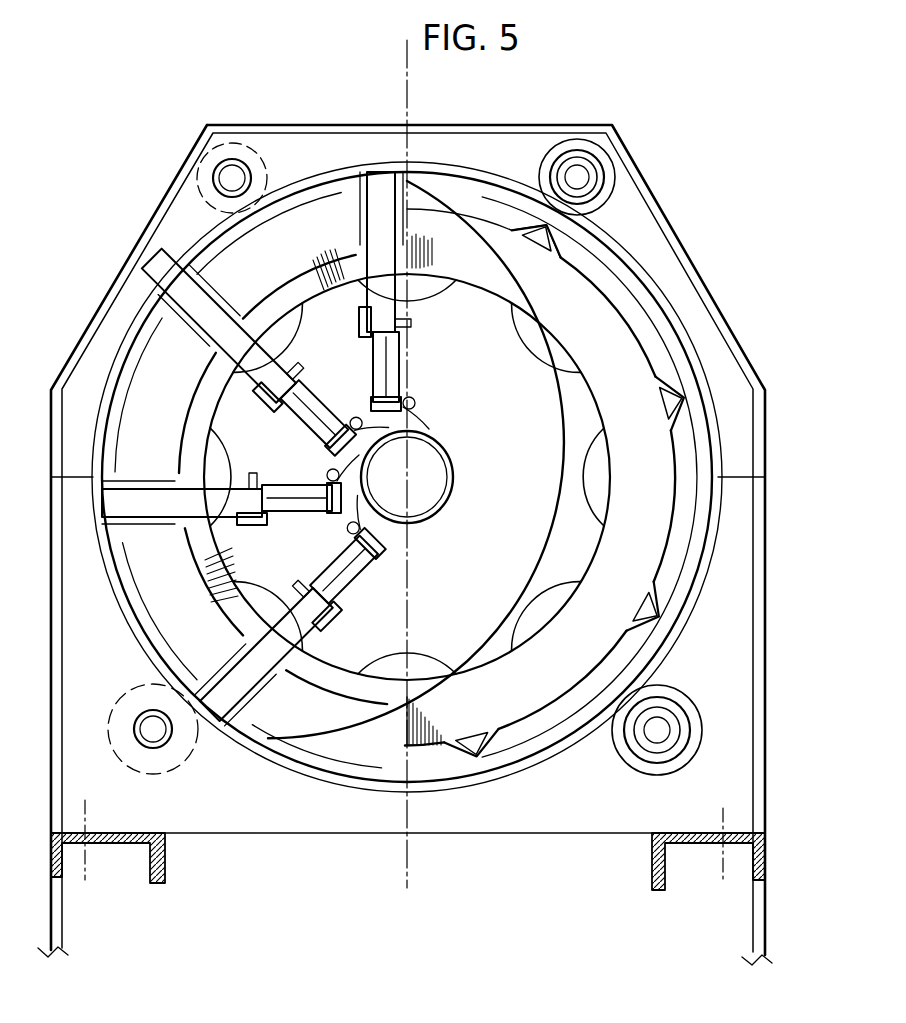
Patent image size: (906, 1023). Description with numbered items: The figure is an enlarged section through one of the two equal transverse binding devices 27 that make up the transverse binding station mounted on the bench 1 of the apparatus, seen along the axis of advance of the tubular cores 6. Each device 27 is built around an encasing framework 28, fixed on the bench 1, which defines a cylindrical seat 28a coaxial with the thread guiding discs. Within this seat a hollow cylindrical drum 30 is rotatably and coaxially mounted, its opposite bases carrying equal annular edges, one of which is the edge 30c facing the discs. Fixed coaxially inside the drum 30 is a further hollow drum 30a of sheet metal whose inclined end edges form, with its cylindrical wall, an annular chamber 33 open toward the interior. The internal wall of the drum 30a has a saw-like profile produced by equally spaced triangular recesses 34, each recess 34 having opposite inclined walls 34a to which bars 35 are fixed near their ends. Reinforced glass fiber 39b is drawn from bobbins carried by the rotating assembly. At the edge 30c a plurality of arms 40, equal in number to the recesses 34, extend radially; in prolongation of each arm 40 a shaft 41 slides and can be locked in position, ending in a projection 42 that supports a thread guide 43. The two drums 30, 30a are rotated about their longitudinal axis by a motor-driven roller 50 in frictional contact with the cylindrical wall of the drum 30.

The bench 1 is at (127, 850).
The tubular core 6 is at (453, 487).
The transverse binding device 27 is at (672, 150).
The encasing framework 28 is at (63, 648).
The cylindrical seat 28a is at (652, 282).
The hollow cylindrical drum 30 is at (272, 188).
The further hollow drum 30a is at (653, 337).
The annular edge 30c is at (305, 195).
The annular chamber 33 is at (630, 533).
The triangular recess 34 is at (543, 250).
The inclined wall 34a is at (535, 230).
The bar 35 is at (556, 240).
The reinforced glass fiber 39b is at (530, 200).
The arm 40 is at (203, 312).
The shaft 41 is at (403, 355).
The projection 42 is at (412, 418).
The thread guide 43 is at (414, 402).
The roller 50 is at (206, 165).